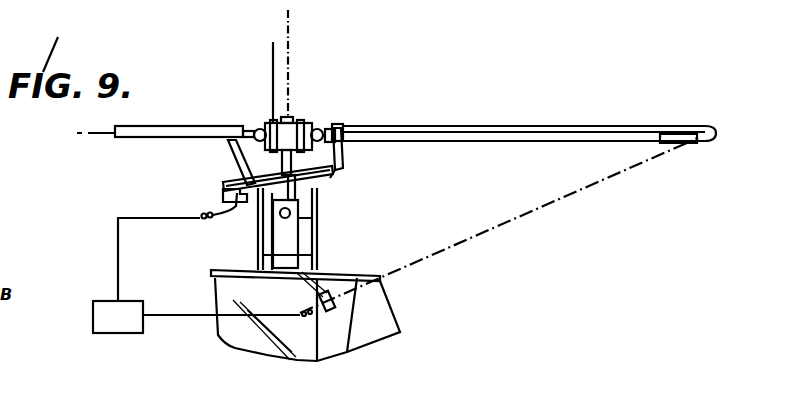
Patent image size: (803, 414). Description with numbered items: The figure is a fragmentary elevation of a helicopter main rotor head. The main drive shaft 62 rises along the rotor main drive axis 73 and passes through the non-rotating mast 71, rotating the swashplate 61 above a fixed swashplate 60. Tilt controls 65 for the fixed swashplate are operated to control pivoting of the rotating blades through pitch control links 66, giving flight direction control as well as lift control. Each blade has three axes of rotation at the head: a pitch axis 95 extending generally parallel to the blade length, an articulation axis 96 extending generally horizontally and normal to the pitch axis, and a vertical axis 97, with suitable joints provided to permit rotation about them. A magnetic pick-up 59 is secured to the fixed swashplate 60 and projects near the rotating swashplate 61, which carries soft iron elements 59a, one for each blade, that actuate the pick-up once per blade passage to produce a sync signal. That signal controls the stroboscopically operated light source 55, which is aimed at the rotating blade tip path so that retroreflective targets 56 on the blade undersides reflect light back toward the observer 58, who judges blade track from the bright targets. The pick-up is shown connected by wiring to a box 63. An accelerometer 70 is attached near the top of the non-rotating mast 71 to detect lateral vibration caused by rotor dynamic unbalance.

The stroboscopically operated light source 55 is at (318, 362).
The retroreflective target 56 is at (680, 146).
The observer 58 is at (379, 0).
The magnetic pick-up 59 is at (237, 208).
The soft iron element 59a is at (237, 191).
The fixed swashplate 60 is at (300, 202).
The swashplate 61 is at (342, 160).
The main drive shaft 62 is at (292, 117).
The control box 63 is at (107, 322).
The tilt controls 65 is at (320, 251).
The pitch control link 66 is at (232, 155).
The accelerometer 70 is at (298, 216).
The non-rotating mast 71 is at (280, 232).
The rotor main drive axis 73 is at (290, 48).
The pitch axis 95 is at (202, 128).
The articulation axis 96 is at (317, 128).
The vertical axis 97 is at (273, 50).